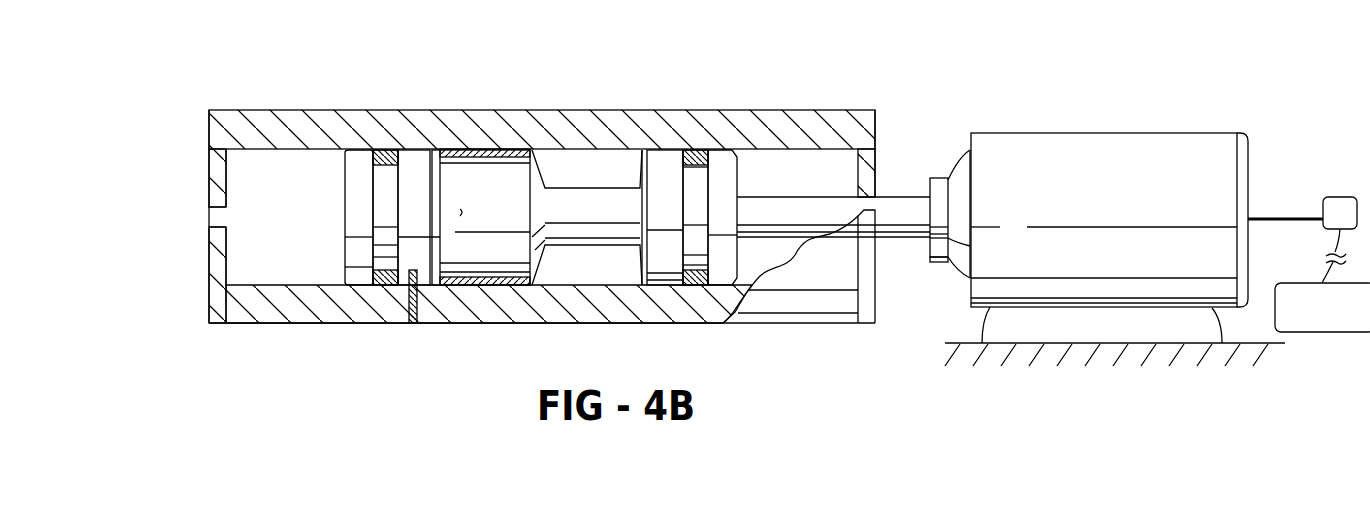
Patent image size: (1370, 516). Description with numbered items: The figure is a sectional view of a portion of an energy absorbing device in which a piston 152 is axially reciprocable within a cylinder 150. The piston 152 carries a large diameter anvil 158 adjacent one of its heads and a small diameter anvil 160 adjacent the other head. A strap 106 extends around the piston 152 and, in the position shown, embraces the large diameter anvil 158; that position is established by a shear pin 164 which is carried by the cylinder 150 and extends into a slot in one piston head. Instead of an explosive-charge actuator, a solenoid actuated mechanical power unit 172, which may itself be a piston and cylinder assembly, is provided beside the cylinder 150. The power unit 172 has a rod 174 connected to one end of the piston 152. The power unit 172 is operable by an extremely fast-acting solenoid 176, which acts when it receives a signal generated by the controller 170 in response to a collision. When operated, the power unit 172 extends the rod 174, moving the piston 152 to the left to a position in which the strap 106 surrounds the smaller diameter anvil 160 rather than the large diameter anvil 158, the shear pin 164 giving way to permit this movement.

The cylinder 150 is at (376, 108).
The piston 152 is at (328, 207).
The strap 106 is at (472, 150).
The large diameter anvil 158 is at (502, 187).
The small diameter anvil 160 is at (603, 182).
The shear pin 164 is at (413, 325).
The rod 174 is at (898, 198).
The solenoid actuated mechanical power unit 172 is at (1038, 157).
The solenoid 176 is at (1337, 208).
The controller 170 is at (1333, 330).